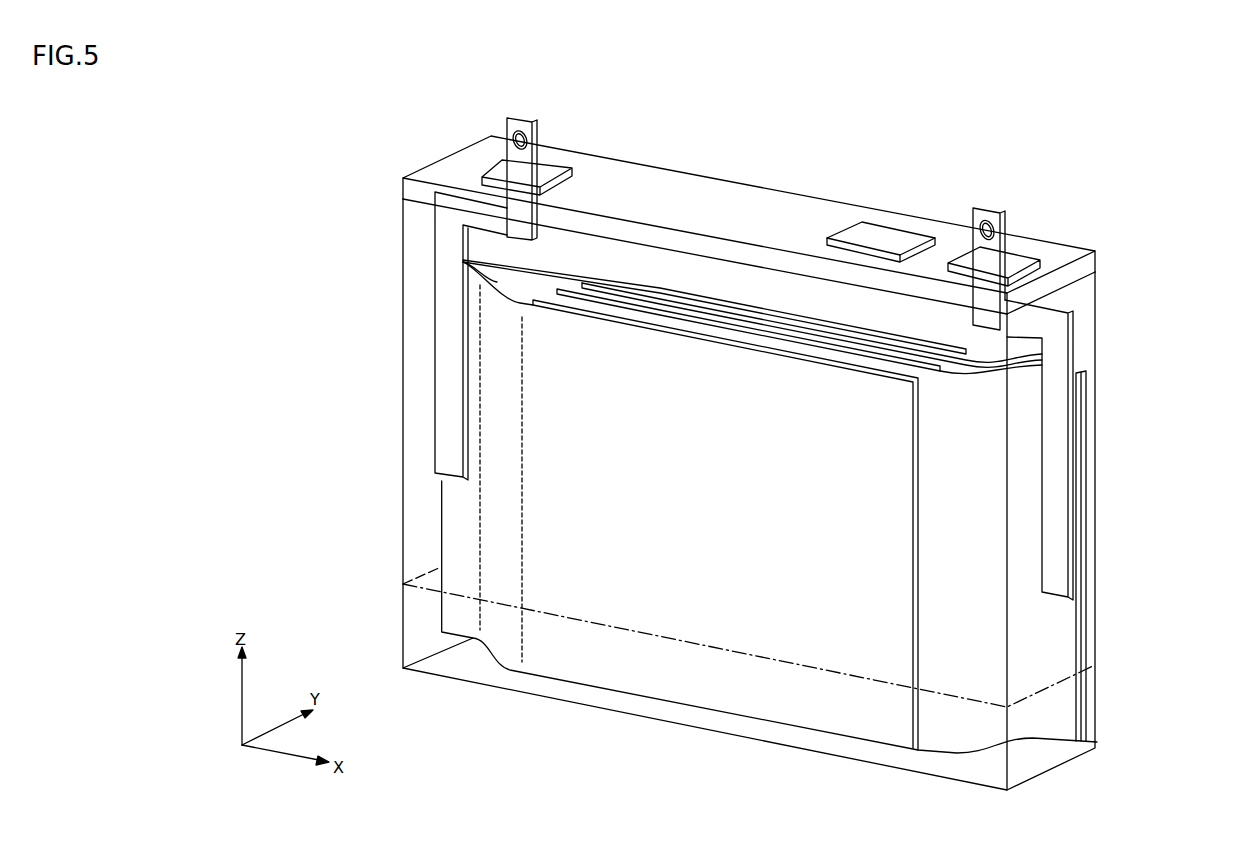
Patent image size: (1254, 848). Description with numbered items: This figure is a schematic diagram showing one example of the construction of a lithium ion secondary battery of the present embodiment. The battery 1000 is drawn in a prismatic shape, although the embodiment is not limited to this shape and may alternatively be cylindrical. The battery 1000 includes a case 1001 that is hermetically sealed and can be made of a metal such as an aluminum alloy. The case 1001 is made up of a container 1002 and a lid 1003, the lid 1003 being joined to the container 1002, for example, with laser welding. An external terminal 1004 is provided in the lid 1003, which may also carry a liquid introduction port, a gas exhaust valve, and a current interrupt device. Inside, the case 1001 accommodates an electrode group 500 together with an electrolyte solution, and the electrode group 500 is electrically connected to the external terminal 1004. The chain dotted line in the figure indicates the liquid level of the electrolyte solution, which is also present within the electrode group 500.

The battery 1000 is at (961, 89).
The case 1001 is at (1182, 258).
The container 1002 is at (1097, 308).
The lid 1003 is at (1097, 263).
The external terminal 1004 is at (523, 119).
The electrode group 500 is at (537, 470).